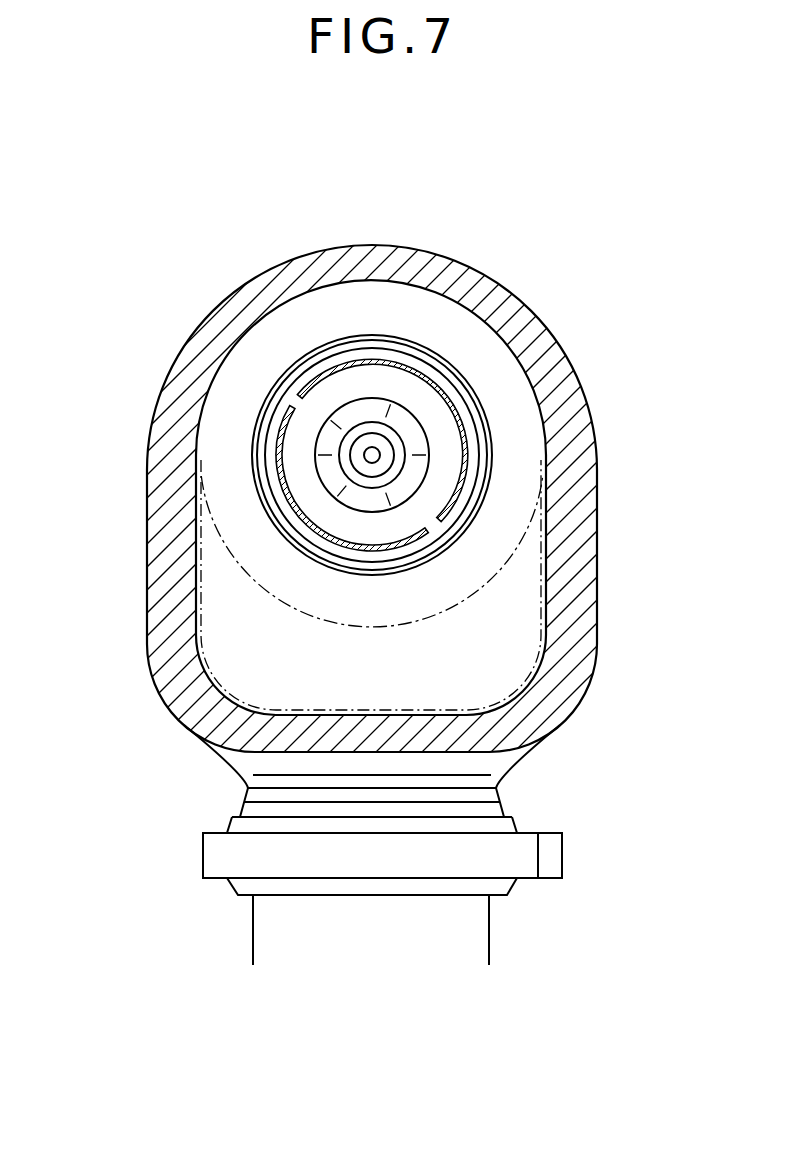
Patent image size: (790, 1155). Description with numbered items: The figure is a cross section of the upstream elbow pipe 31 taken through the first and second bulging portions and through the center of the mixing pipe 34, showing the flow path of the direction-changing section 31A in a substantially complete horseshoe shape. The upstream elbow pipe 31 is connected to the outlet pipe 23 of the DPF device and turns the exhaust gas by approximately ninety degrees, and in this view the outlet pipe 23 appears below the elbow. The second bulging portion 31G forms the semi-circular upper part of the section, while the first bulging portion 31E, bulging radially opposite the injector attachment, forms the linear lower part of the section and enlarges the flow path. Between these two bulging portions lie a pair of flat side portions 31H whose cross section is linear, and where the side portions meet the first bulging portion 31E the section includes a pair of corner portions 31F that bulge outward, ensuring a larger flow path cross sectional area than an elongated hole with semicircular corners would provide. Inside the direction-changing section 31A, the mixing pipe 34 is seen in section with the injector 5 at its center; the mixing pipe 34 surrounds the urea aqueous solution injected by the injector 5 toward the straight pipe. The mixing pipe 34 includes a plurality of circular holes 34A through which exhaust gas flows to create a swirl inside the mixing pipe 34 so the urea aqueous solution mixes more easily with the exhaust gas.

The upstream elbow pipe 31 is at (458, 259).
The second bulging portion 31G is at (362, 258).
The flat side portions 31H is at (153, 495).
The corner portions 31F is at (201, 699).
The first bulging portion 31E is at (472, 740).
The direction-changing section 31A is at (517, 622).
The mixing pipe 34 is at (466, 430).
The circular holes 34A is at (284, 414).
The injector 5 is at (384, 447).
The outlet pipe 23 is at (483, 945).